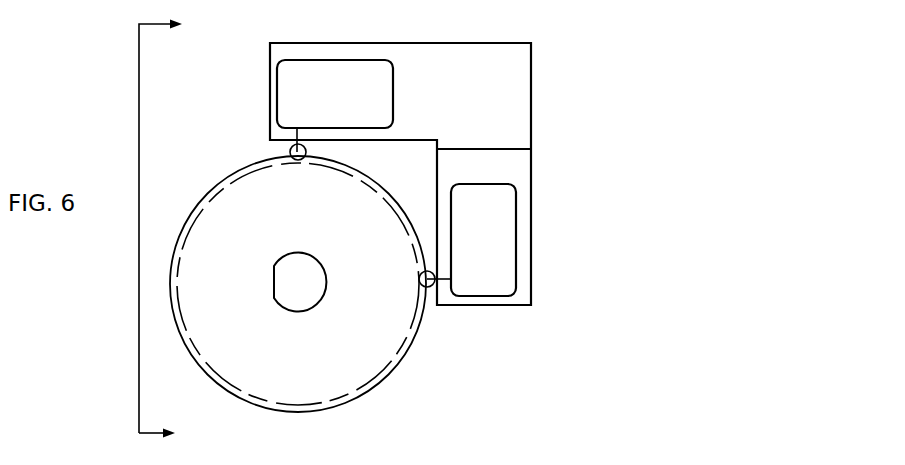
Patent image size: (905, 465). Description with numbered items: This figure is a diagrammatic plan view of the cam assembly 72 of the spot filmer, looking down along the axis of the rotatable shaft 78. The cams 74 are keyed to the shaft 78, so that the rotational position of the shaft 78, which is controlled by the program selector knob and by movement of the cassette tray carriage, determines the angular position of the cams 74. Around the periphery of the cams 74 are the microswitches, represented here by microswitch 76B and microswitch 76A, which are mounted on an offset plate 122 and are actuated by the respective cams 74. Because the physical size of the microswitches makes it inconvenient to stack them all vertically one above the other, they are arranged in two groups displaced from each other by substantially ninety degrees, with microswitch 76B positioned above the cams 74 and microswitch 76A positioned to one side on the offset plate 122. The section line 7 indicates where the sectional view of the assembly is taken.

The section line 7- 7 is at (168, 229).
The offset plate 122 is at (531, 118).
The microswitch 76B is at (337, 66).
The microswitch 76A is at (508, 262).
The cam assembly 72 is at (452, 346).
The cam 74 is at (323, 410).
The rotatable shaft 78 is at (322, 274).